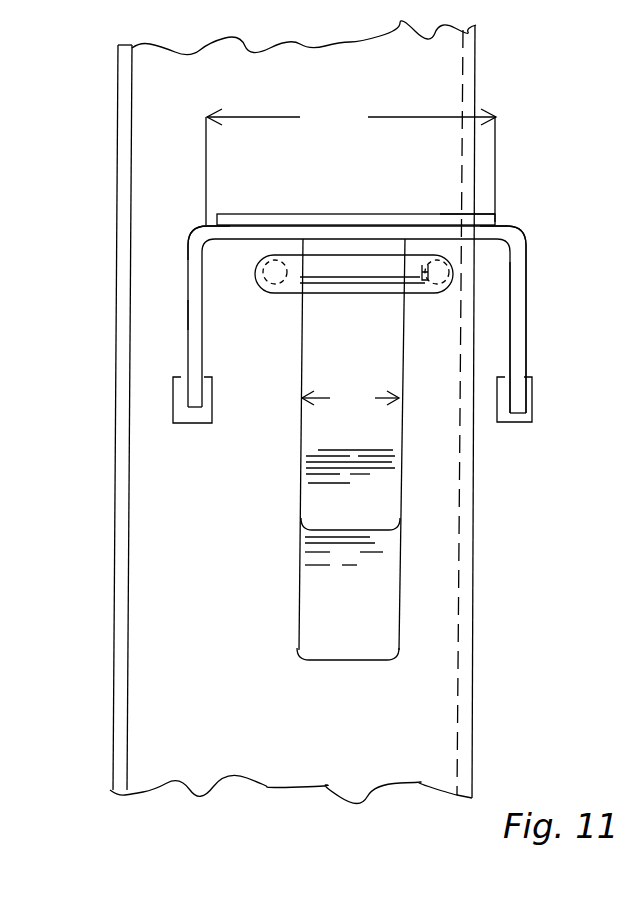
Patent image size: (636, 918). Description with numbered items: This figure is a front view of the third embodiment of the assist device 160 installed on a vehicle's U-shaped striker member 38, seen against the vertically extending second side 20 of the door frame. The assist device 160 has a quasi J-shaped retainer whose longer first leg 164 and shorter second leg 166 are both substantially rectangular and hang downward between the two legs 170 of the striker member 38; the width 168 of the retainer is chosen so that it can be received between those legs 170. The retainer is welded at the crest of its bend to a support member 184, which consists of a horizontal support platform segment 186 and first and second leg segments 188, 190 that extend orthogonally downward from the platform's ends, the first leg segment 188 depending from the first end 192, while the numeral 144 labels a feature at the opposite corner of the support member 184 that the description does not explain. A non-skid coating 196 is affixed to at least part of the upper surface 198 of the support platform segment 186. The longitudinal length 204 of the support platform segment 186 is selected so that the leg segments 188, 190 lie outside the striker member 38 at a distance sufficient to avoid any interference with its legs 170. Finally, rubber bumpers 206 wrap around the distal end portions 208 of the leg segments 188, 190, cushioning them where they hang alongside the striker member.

The second side 20 is at (243, 690).
The U-shaped striker member 38 is at (301, 487).
The bracket left corner 144 is at (207, 224).
The assist device 160 is at (148, 250).
The first leg 164 is at (343, 662).
The second leg 166 is at (300, 467).
The width 168 is at (350, 400).
The legs 170 is at (262, 296).
The support member 184 is at (339, 331).
The support platform segment 186 is at (255, 283).
The first leg segment 188 is at (531, 285).
The second leg segment 190 is at (188, 290).
The first end 192 is at (500, 226).
The non-skid coating 196 is at (378, 214).
The upper surface 198 is at (417, 216).
The longitudinal length 204 is at (351, 165).
The bumpers 206 is at (173, 391).
The distal end portions 208 is at (195, 388).